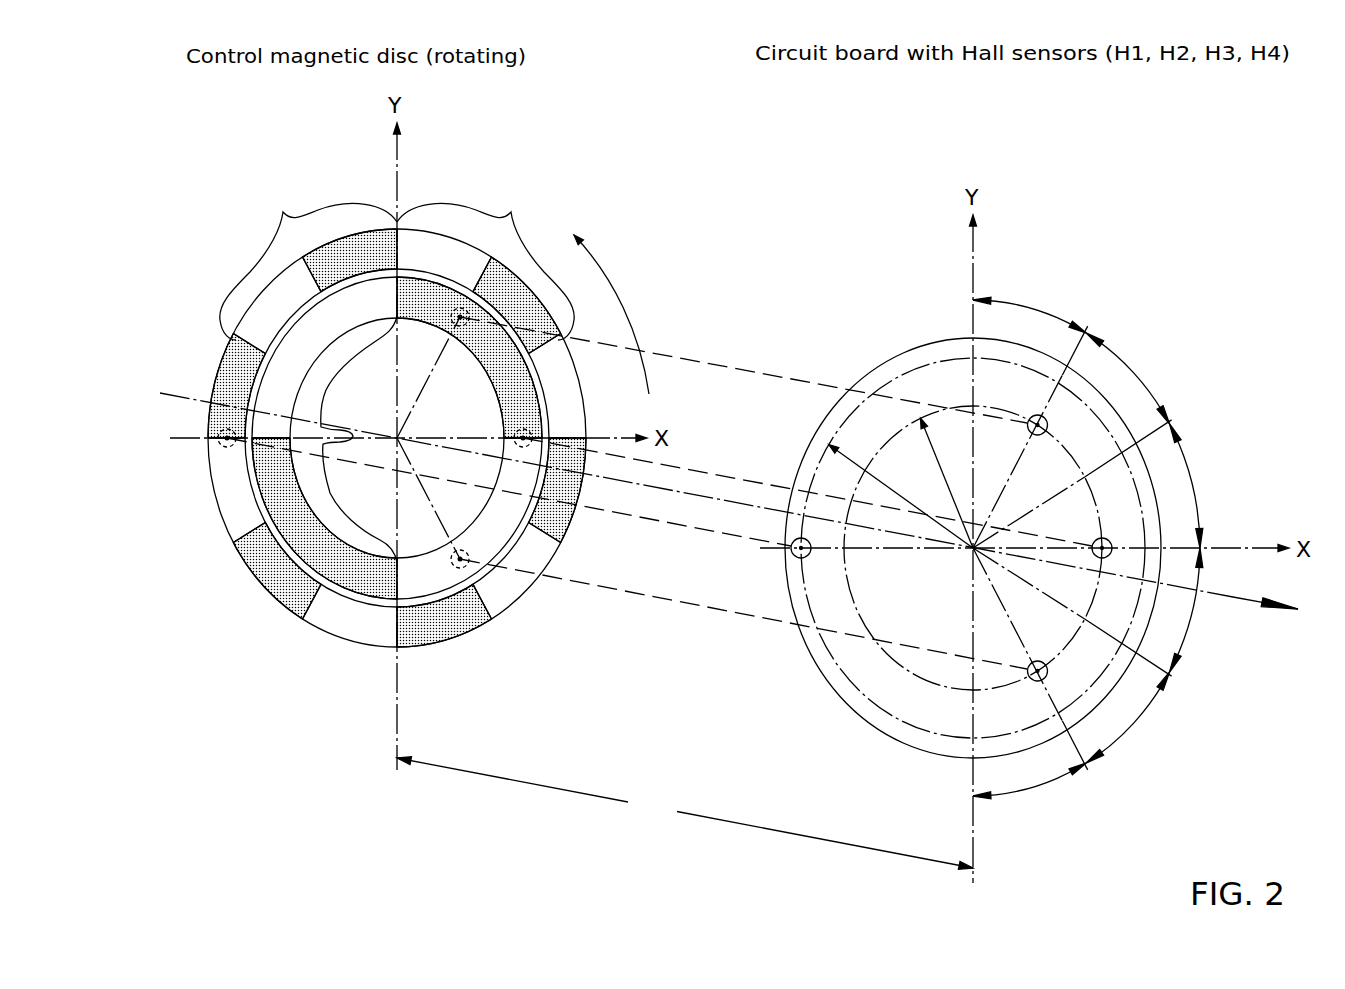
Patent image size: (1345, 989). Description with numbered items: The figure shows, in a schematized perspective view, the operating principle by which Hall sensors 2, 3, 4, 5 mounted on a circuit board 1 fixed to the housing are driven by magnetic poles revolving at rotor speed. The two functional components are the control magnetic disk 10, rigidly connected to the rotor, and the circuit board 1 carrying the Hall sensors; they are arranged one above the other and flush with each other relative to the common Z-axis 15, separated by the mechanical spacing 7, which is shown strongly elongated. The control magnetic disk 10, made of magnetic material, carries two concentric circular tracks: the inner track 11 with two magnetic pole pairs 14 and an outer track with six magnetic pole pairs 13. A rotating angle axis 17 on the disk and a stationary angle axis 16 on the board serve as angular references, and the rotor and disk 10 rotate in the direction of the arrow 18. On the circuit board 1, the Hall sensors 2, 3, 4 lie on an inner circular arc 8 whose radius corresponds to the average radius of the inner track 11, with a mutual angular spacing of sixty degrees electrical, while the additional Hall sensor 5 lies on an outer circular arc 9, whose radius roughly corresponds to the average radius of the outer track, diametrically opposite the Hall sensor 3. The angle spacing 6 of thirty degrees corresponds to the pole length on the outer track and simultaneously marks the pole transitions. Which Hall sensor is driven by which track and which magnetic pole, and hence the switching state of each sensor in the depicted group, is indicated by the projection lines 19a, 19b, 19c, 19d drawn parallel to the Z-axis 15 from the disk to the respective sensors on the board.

The circuit board 1 is at (847, 643).
The Hall sensor H1 2 is at (1048, 688).
The Hall sensor H2 3 is at (1110, 541).
The Hall sensor H3 4 is at (1048, 421).
The Hall sensor H4 5 is at (802, 560).
The angle spacing 6 is at (1017, 302).
The mechanical spacing Z1 7 is at (649, 784).
The inner circular arc 8 is at (882, 443).
The outer circular arc 9 is at (948, 358).
The control magnetic disk 10 is at (214, 247).
The inner track 11 is at (270, 557).
The magnetic pole pair (outer) 13 is at (281, 212).
The magnetic pole pair (inner) 14 is at (348, 428).
The Z-axis 15 is at (1233, 600).
The angle axis (stationary) 16 is at (1072, 361).
The rotating angle axis 17 is at (457, 322).
The arrow direction 18 is at (607, 278).
The projection line 19a is at (640, 597).
The projection line 19b is at (623, 515).
The projection line 19c is at (702, 472).
The projection line 19d is at (782, 374).